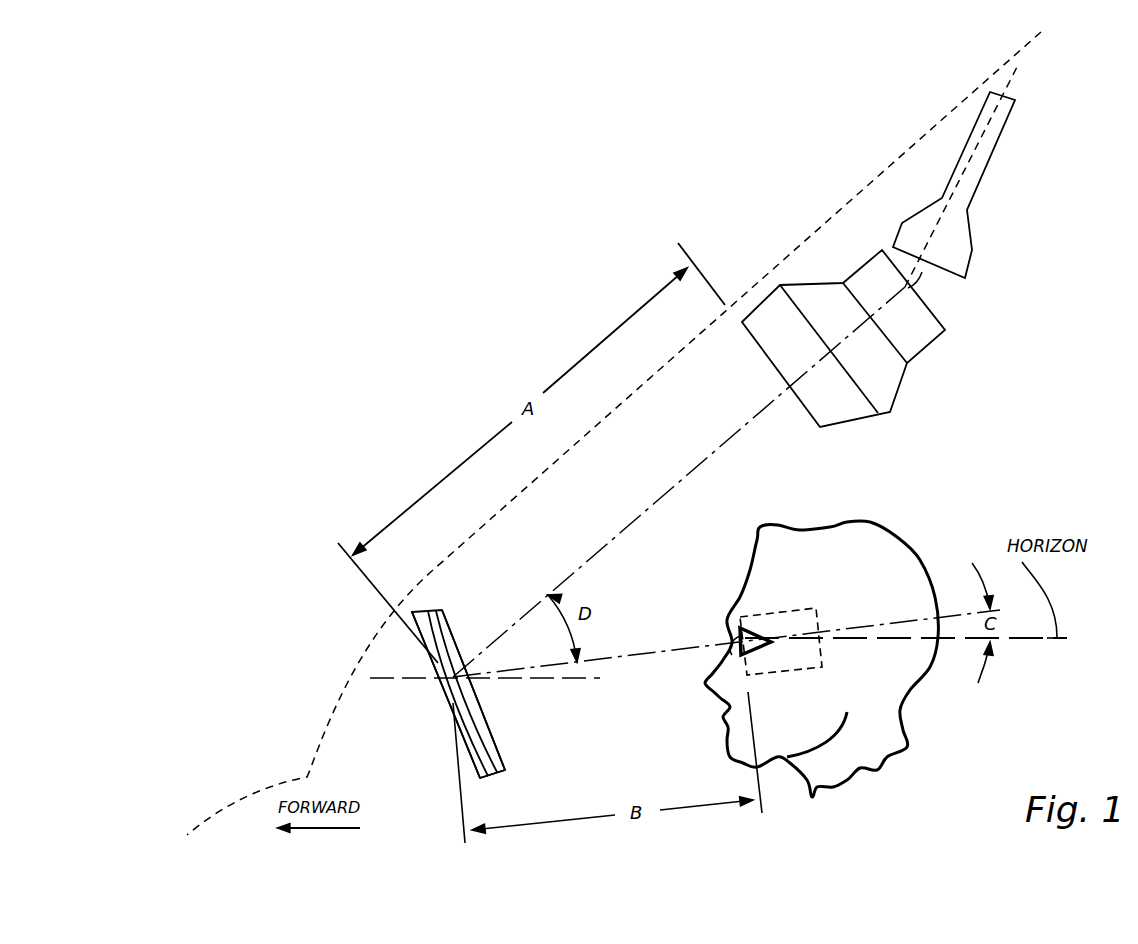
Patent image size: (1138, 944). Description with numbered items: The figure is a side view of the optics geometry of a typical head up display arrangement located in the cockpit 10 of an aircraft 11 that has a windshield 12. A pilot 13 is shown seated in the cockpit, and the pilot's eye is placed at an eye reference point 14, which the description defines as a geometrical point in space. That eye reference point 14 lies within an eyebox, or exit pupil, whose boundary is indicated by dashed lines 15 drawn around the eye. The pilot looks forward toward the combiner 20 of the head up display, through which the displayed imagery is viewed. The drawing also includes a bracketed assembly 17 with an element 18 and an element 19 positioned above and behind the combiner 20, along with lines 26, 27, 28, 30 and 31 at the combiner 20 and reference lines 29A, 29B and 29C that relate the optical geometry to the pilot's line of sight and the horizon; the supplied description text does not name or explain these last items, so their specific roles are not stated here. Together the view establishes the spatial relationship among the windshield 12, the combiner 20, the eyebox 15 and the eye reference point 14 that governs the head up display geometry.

The cockpit 10 is at (440, 748).
The aircraft 11 is at (670, 378).
The windshield 12 is at (614, 433).
The pilot 13 is at (822, 647).
The eye reference point 14 is at (710, 672).
The eyebox 15 is at (795, 610).
The projector assembly 17 is at (953, 104).
The image source 18 is at (979, 182).
The relay lens assembly 19 is at (930, 343).
The combiner 20 is at (464, 677).
The combiner surface 26 is at (480, 697).
The combiner bottom edge 27 is at (483, 778).
The combiner curved surface 28 is at (435, 612).
The line of sight axis 29A is at (640, 654).
The horizontal reference line 29B is at (577, 678).
The optical axis 29C is at (658, 502).
The combiner outer surface 30 is at (497, 748).
The combiner inner surface 31 is at (447, 690).